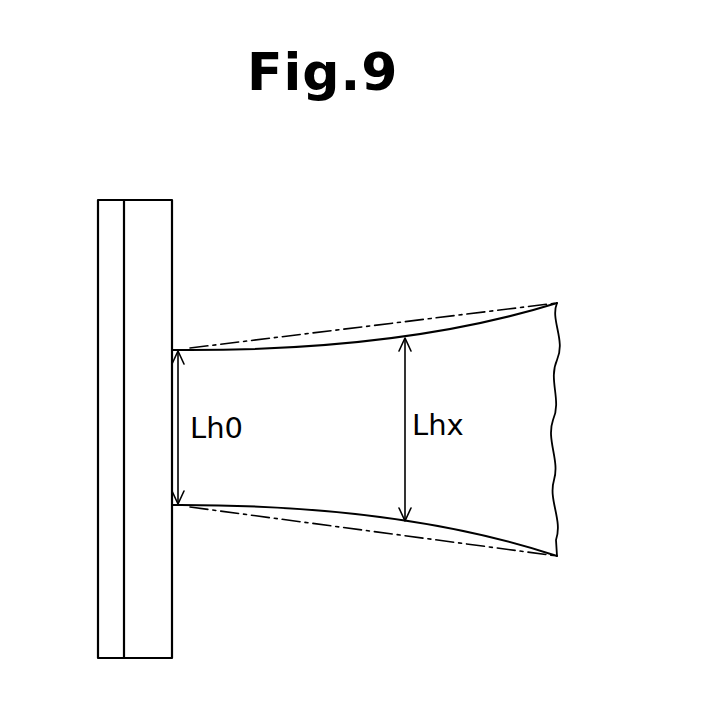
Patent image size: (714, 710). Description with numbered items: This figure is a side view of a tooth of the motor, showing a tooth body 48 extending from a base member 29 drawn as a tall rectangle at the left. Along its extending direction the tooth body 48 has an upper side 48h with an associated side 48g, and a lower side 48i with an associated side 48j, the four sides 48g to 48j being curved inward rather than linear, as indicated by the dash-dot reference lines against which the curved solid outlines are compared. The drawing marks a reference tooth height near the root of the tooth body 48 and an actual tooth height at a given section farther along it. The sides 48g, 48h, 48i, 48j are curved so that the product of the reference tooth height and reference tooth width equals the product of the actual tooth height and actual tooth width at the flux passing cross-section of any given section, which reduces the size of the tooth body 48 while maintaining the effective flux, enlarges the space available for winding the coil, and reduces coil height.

The base plate 29 is at (105, 285).
The tooth body 48 is at (548, 425).
The side 48h is at (367, 340).
The side 48g is at (373, 304).
The side 48i is at (282, 512).
The side 48j is at (373, 542).